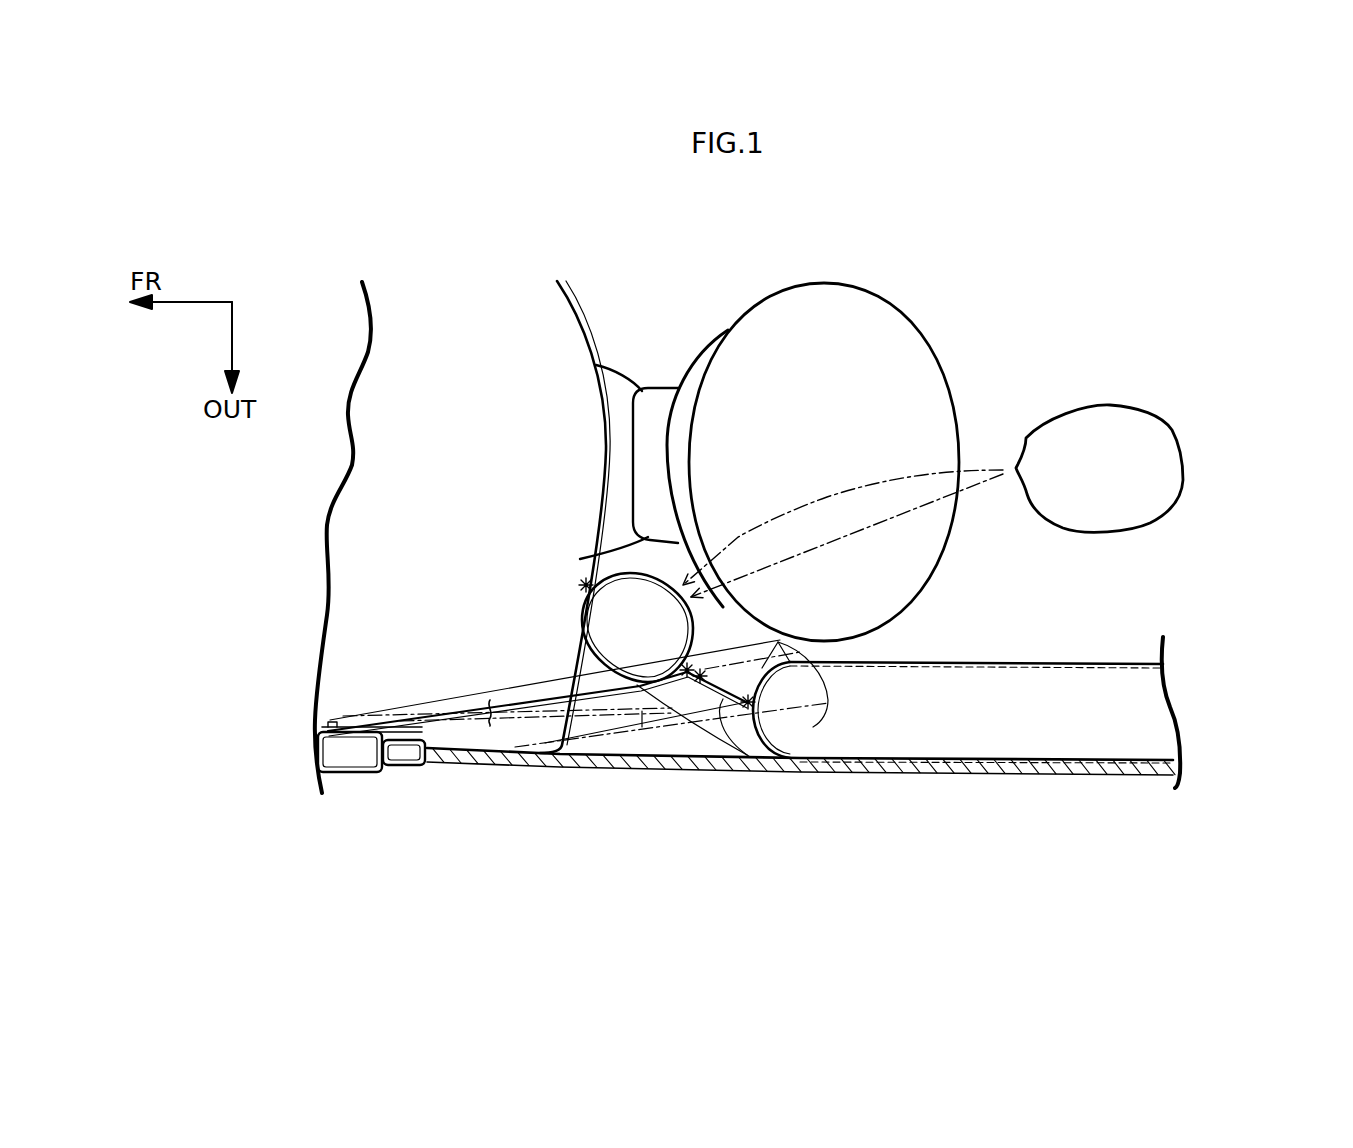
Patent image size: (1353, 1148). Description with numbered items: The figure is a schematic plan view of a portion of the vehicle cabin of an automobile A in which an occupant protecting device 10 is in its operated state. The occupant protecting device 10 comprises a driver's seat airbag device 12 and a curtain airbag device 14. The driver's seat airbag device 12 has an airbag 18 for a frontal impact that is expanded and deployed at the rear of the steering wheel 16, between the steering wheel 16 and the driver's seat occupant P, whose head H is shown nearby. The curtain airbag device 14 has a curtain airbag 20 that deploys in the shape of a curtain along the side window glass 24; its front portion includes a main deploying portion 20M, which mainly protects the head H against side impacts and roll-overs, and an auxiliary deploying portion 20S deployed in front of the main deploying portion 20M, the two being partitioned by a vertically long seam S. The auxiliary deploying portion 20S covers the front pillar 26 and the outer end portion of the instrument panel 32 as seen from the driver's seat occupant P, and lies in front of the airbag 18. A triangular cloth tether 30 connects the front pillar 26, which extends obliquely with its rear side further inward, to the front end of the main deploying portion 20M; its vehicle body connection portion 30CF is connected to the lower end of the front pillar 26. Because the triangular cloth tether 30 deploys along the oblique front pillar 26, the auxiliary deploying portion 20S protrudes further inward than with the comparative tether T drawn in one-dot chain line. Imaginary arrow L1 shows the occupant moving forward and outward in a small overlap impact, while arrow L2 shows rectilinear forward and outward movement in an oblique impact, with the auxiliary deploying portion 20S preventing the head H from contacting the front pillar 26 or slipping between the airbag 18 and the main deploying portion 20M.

The occupant protecting device 10 is at (1205, 319).
The driver's seat airbag device 12 is at (950, 319).
The curtain airbag device 14 is at (1052, 638).
The steering wheel 16 is at (705, 337).
The airbag for a frontal impact 18 is at (857, 298).
The curtain airbag 20 is at (1108, 662).
The main deploying portion 20M is at (930, 680).
The auxiliary deploying portion 20S is at (603, 623).
The side window glass 24 is at (853, 775).
The front pillar 26 is at (342, 770).
The triangular cloth tether 30 is at (541, 698).
The vehicle body connection portion 30CF is at (340, 727).
The instrument panel 32 is at (570, 343).
The automobile A is at (993, 787).
The head H is at (1093, 420).
The arrow L1 is at (843, 490).
The arrow L2 is at (850, 560).
The driver's seat occupant P is at (1177, 425).
The seam S is at (751, 762).
The tether T is at (653, 735).